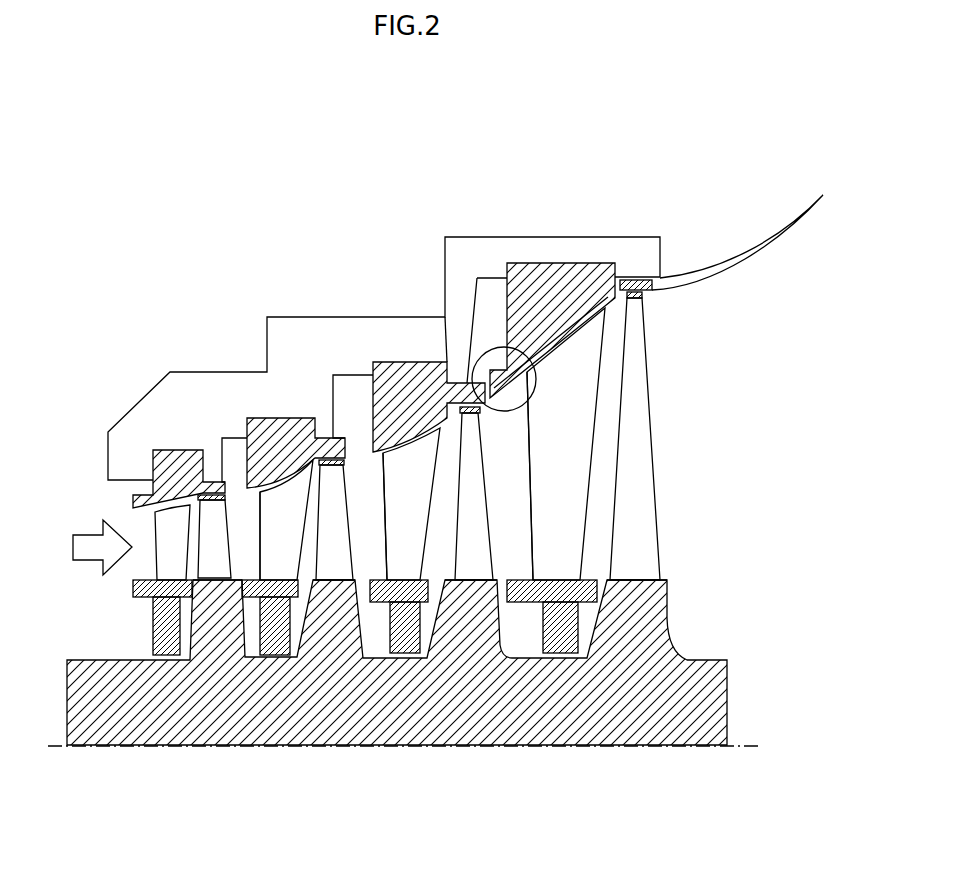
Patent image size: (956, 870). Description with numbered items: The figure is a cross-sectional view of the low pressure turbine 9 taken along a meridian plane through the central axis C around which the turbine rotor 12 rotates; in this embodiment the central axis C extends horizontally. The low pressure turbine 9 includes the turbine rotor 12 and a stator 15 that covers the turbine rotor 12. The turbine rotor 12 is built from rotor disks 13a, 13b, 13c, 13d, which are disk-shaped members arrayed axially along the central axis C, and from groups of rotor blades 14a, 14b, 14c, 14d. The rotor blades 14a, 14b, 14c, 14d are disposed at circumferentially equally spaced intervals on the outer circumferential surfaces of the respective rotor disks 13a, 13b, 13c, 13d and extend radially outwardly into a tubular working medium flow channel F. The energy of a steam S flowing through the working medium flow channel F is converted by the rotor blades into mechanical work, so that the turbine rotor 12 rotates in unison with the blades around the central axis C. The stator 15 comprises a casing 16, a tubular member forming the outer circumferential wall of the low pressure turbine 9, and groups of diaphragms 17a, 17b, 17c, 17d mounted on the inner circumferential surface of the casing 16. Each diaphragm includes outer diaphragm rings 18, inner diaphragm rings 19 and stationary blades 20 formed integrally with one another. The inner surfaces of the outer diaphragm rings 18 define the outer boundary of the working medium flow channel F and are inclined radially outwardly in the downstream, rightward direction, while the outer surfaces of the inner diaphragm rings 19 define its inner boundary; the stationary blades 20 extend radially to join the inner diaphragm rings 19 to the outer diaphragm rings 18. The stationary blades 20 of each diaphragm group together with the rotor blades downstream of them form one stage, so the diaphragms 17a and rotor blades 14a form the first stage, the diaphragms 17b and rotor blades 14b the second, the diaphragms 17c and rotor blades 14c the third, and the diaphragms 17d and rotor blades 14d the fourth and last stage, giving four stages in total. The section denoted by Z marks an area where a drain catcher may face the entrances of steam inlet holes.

The low pressure turbine 9 is at (272, 183).
The turbine rotor 12 is at (729, 574).
The rotor disk 13a is at (230, 606).
The rotor disk 13b is at (357, 603).
The rotor disk 13c is at (500, 603).
The rotor disk 13d is at (668, 612).
The rotor blades 14a is at (201, 576).
The rotor blades 14b is at (314, 574).
The rotor blades 14c is at (452, 561).
The rotor blades 14d is at (621, 531).
The stator 15 is at (500, 229).
The casing 16 is at (456, 236).
The diaphragms 17a is at (133, 588).
The diaphragms 17b is at (264, 541).
The diaphragms 17c is at (386, 539).
The diaphragms 17d is at (532, 536).
The outer diaphragm ring 18 is at (176, 450).
The inner diaphragm ring 19 is at (150, 622).
The stationary blades 20 is at (157, 532).
The steam S is at (102, 547).
The central axis C is at (412, 746).
The working medium flow channel F is at (502, 477).
The section Z is at (507, 347).